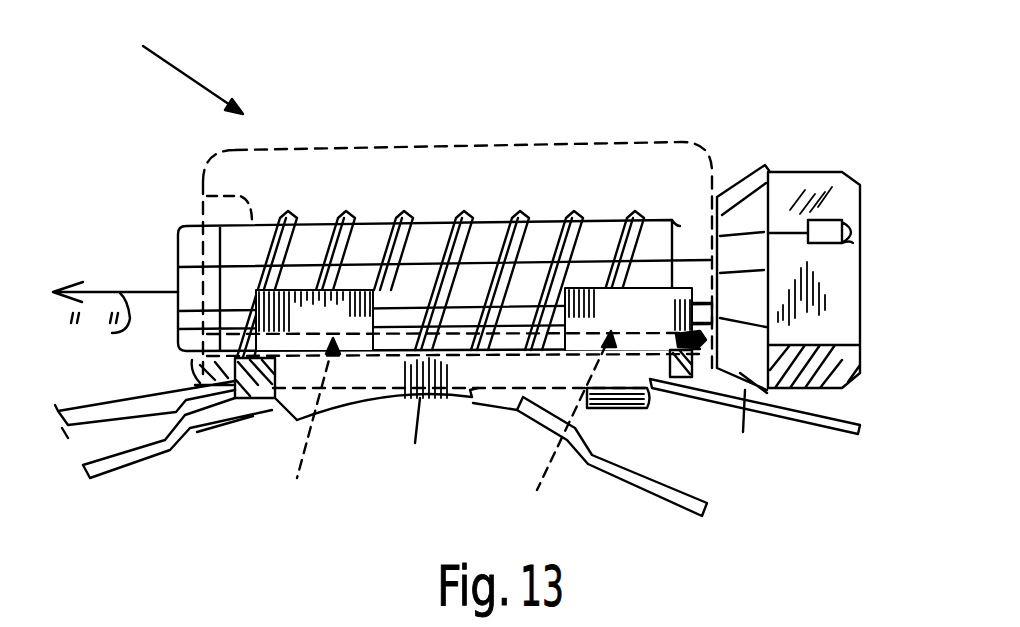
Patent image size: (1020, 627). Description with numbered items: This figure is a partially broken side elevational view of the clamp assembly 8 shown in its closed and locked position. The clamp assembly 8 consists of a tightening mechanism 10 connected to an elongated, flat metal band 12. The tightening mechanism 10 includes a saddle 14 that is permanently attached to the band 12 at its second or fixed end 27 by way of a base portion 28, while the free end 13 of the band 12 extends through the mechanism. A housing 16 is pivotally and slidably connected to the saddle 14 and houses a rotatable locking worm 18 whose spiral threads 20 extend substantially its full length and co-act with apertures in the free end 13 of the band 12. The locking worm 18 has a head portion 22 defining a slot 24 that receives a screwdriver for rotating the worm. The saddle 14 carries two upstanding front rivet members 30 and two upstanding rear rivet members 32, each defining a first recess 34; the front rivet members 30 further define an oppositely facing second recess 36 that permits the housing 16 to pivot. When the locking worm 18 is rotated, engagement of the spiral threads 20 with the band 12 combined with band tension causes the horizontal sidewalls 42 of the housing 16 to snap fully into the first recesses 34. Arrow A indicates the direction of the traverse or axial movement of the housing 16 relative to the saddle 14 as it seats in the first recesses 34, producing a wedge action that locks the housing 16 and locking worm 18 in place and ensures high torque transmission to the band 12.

The clamp assembly 8 is at (182, 57).
The tightening mechanism 10 is at (257, 150).
The band 12 is at (674, 504).
The free end 13 is at (814, 428).
The saddle 14 is at (647, 398).
The housing 16 is at (668, 140).
The locking worm 18 is at (205, 196).
The spiral threads 20 is at (350, 216).
The head portion 22 is at (862, 210).
The slot 24 is at (853, 243).
The second end 27 is at (203, 405).
The base portion 28 is at (470, 398).
The front rivet members 30 is at (313, 316).
The rear rivet members 32 is at (634, 314).
The first recess 34 is at (581, 443).
The second recess 36 is at (275, 407).
The sidewalls 42 is at (456, 437).
The arrow A is at (115, 320).